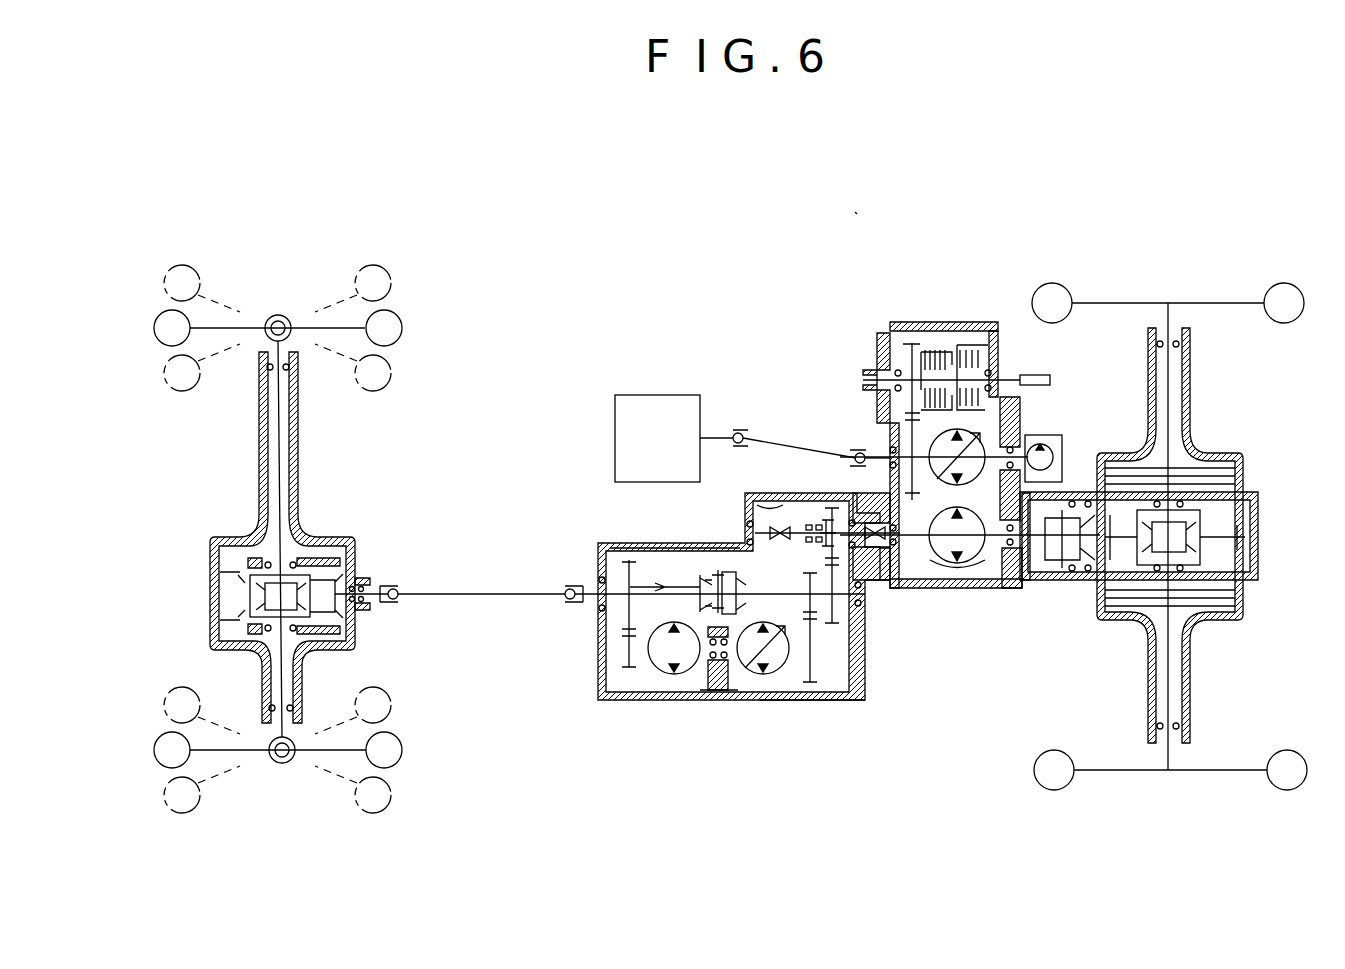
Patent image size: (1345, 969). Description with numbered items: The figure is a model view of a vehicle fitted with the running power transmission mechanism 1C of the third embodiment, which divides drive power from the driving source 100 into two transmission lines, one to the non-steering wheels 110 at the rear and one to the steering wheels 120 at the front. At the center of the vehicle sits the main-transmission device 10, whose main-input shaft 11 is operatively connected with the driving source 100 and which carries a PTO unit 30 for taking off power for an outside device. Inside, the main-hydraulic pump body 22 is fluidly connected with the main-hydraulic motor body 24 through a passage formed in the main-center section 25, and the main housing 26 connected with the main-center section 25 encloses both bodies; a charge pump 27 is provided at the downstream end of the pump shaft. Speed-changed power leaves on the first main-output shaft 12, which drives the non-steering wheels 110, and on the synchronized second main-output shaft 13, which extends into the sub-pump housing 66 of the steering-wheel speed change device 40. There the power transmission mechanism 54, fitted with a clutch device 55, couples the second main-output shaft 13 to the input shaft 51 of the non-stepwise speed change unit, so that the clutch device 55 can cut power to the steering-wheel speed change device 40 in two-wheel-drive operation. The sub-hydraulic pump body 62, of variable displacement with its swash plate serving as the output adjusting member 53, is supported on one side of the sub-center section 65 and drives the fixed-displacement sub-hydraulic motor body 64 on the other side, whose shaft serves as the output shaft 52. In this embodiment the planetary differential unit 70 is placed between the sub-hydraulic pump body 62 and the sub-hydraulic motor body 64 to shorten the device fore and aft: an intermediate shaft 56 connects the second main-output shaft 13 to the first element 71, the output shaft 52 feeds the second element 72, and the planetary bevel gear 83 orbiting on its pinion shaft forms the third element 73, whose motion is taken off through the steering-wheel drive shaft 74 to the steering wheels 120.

The running power transmission mechanism 1C is at (858, 205).
The main-transmission device 10 is at (950, 302).
The main-input shaft 11 is at (872, 456).
The first main-output shaft 12 is at (990, 575).
The second main-output shaft 13 is at (917, 540).
The main-hydraulic pump body 22 is at (1020, 425).
The main-hydraulic motor body 24 is at (968, 568).
The main-center section 25 is at (1028, 575).
The main housing 26 is at (893, 590).
The charge pump 27 is at (1062, 448).
The PTO unit 30 is at (925, 322).
The steering-wheel speed change device 40 is at (822, 738).
The input shaft 51 is at (840, 700).
The output shaft 52 is at (615, 700).
The output adjusting member 53 is at (752, 700).
The power transmission mechanism 54 is at (848, 510).
The clutch device 55 is at (800, 503).
The intermediate shaft 56 is at (755, 593).
The sub-hydraulic pump body 62 is at (785, 700).
The sub-hydraulic motor body 64 is at (690, 700).
The sub-center section 65 is at (720, 700).
The sub-pump housing 66 is at (790, 498).
The planetary differential unit 70 is at (600, 555).
The first element 71 is at (728, 570).
The second element 72 is at (640, 548).
The third element 73 is at (712, 578).
The steering-wheel drive shaft 74 is at (592, 600).
The planetary bevel gear 83 is at (705, 578).
The driving source 100 is at (655, 395).
The non-steering wheels 110 is at (1280, 288).
The steering wheels 120 is at (395, 310).